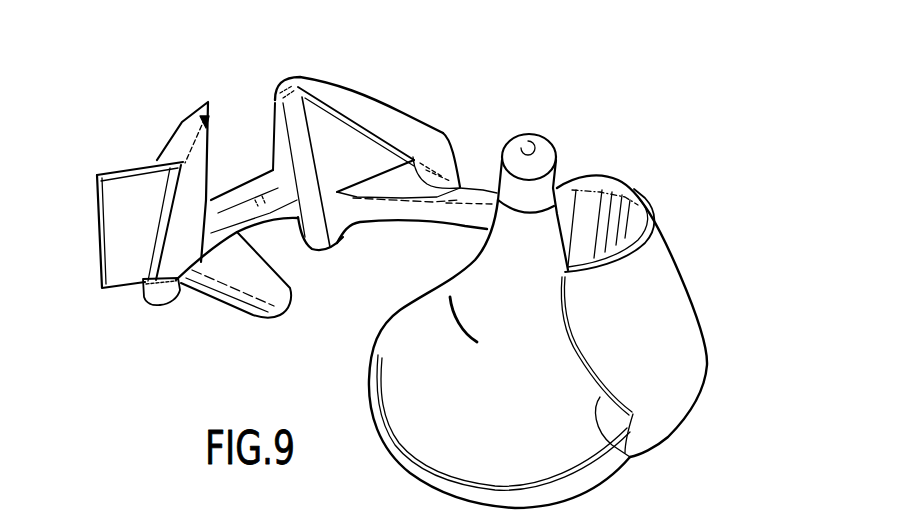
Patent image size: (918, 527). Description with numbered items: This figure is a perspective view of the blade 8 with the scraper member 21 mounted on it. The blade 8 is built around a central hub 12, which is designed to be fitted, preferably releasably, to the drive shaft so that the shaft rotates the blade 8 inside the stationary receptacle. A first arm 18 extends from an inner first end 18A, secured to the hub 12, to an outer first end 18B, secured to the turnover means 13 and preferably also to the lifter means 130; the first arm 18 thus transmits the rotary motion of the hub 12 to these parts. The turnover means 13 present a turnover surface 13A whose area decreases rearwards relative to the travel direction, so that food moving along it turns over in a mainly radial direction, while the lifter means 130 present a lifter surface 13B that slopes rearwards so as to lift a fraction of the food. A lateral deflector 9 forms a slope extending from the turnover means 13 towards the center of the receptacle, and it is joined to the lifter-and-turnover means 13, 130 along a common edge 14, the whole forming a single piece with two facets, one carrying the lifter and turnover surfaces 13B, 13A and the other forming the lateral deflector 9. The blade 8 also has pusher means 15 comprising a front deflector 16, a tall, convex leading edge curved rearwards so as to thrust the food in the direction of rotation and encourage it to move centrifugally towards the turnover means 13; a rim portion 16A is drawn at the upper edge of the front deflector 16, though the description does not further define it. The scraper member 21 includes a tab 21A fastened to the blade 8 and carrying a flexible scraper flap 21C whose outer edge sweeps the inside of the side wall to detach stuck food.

The blade 8 is at (680, 208).
The lateral deflector 9 is at (317, 137).
The hub 12 is at (457, 437).
The turnover means 13 is at (333, 87).
The turnover surface 13A is at (402, 125).
The lifter surface 13B is at (430, 137).
The lifter means 130 is at (366, 105).
The common edge 14 is at (384, 130).
The pusher means 15 is at (672, 372).
The front deflector 16 is at (663, 293).
The rim 16A is at (625, 190).
The first arm 18 is at (604, 172).
The inner first end 18A is at (623, 457).
The outer first end 18B is at (357, 212).
The scraper member 21 is at (229, 310).
The tab 21A is at (233, 197).
The scraper flap 21C is at (125, 235).